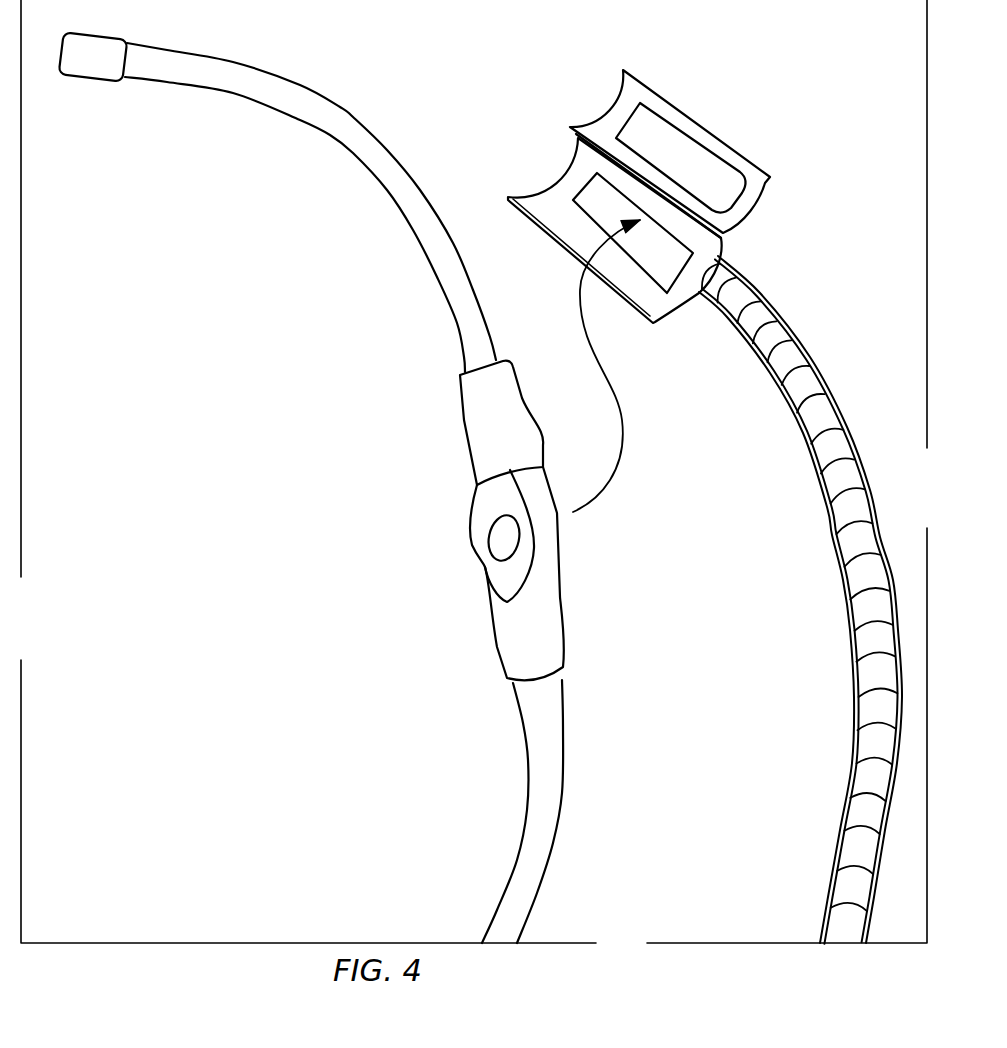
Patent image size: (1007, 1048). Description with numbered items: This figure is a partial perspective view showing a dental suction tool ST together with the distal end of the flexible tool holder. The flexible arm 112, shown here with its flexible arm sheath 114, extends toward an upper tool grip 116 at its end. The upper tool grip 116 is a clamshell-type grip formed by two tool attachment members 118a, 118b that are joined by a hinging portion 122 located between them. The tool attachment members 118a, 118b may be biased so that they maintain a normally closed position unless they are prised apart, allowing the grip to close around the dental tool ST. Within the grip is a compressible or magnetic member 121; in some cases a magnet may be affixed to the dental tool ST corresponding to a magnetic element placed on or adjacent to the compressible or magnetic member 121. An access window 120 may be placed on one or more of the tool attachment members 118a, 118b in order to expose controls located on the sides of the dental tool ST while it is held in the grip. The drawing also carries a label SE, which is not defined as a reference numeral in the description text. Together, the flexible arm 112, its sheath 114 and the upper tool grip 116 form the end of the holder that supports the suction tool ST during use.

The flexible arm 112 is at (796, 600).
The flexible arm sheath 114 is at (758, 294).
The upper tool grip 116 is at (603, 205).
The tool attachment piece 118a is at (651, 318).
The tool attachment piece 118b is at (640, 72).
The access window 120 is at (677, 143).
The compressible or magnetic member 121 is at (597, 213).
The hinging portion 122 is at (605, 150).
The stethoscope earpiece tube SE is at (367, 217).
The suction tool ST is at (452, 531).